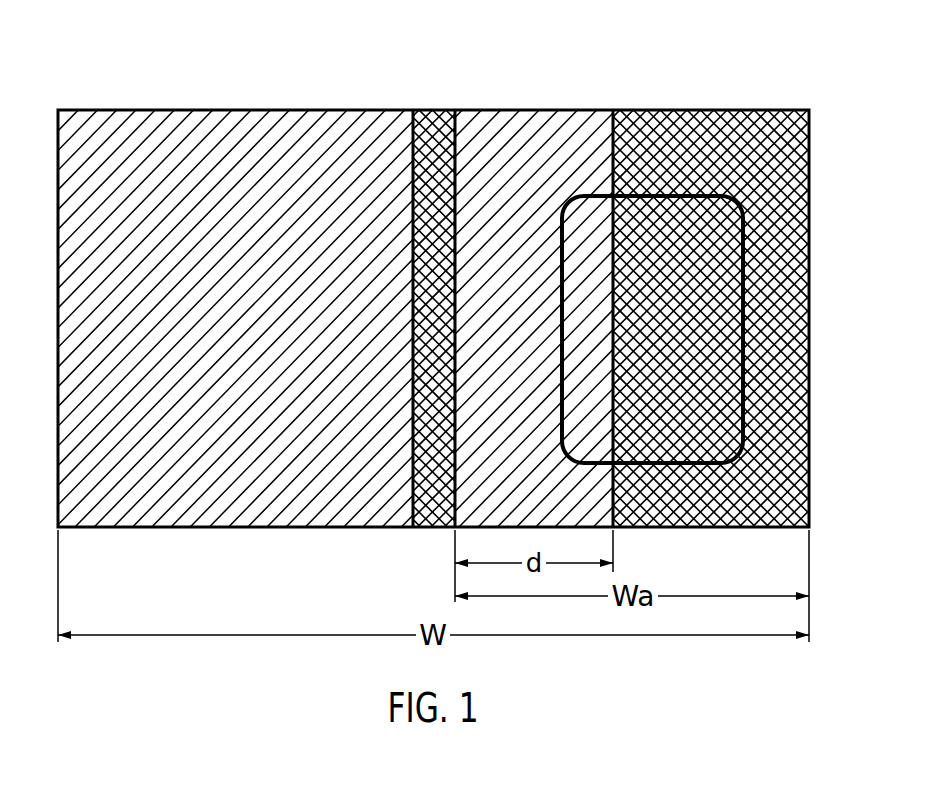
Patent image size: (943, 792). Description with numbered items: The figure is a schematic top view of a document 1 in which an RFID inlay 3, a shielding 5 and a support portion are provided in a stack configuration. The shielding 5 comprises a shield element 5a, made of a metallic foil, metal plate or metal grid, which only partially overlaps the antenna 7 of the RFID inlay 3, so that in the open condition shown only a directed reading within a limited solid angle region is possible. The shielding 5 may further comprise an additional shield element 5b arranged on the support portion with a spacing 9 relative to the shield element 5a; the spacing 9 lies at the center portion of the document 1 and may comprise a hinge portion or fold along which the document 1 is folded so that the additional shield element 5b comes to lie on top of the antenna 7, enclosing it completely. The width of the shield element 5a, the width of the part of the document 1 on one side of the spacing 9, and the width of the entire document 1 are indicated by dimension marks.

The document 1 is at (92, 72).
The RFID inlay 3 is at (786, 278).
The shielding 5 is at (465, 110).
The shield element 5a is at (492, 110).
The additional shield element 5b is at (318, 527).
The antenna 7 is at (667, 182).
The spacing 9 is at (431, 542).